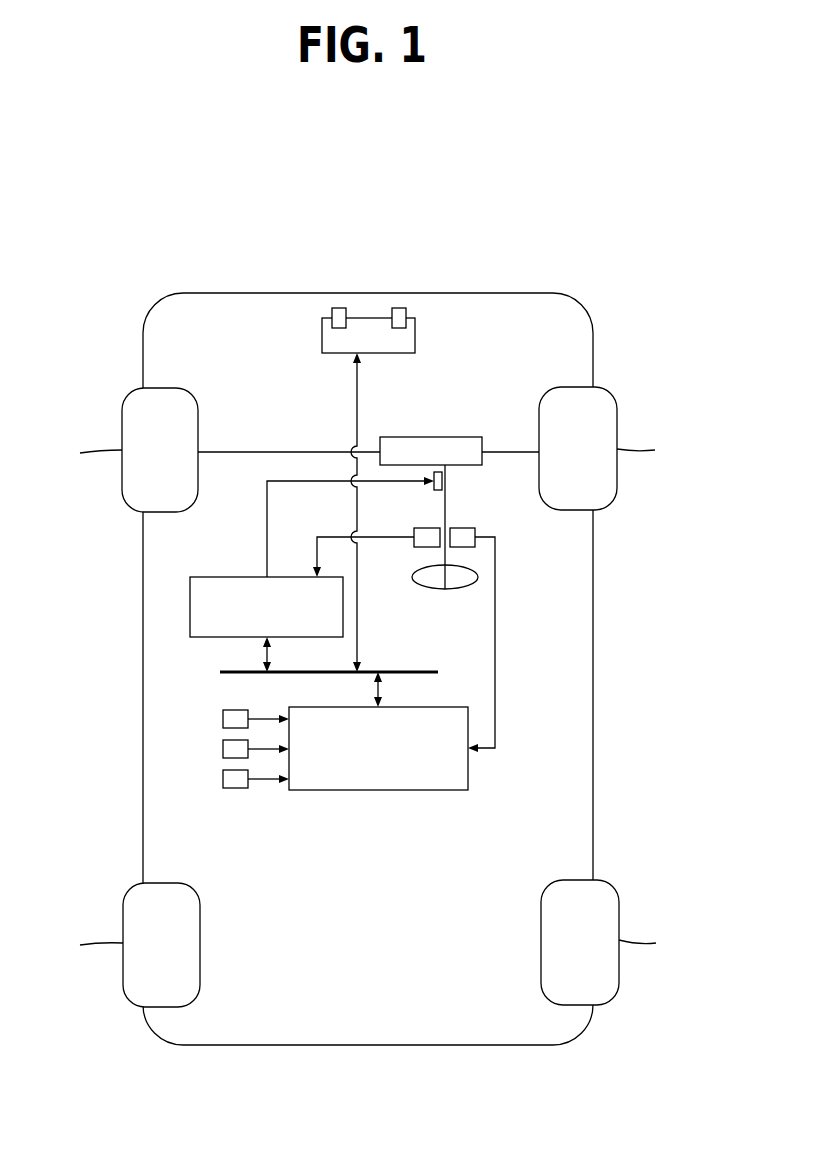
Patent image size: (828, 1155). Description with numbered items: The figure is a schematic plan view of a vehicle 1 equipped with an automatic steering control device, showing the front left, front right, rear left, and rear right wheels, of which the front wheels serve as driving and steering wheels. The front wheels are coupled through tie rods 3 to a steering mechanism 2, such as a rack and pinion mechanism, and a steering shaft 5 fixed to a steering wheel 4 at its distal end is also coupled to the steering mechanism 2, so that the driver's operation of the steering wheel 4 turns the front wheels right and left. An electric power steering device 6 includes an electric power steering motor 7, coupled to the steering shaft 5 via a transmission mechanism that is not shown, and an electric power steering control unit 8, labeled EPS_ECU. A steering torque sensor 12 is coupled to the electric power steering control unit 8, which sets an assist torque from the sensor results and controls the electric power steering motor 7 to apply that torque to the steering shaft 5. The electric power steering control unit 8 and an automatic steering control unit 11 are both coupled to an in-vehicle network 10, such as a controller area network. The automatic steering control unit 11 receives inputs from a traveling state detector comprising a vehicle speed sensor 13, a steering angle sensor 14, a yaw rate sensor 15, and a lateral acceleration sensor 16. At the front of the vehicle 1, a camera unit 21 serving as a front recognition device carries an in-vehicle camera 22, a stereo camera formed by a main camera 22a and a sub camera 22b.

The vehicle 1 is at (527, 219).
The steering mechanism 2 is at (430, 437).
The tie rods 3 is at (268, 452).
The steering wheel 4 is at (445, 590).
The steering shaft 5 is at (446, 497).
The electric power steering device 6 is at (250, 522).
The electric power steering motor 7 is at (437, 491).
The electric power steering control unit 8 is at (222, 577).
The in-vehicle network 10 is at (402, 662).
The automatic steering control unit 11 is at (378, 791).
The steering torque sensor 12 is at (425, 548).
The vehicle speed sensor 13 is at (223, 719).
The steering angle sensor 14 is at (463, 527).
The yaw rate sensor 15 is at (223, 749).
The lateral acceleration sensor 16 is at (223, 779).
The camera unit 21 is at (322, 338).
The in-vehicle camera 22 is at (372, 266).
The main camera 22a is at (338, 307).
The sub camera 22b is at (397, 307).